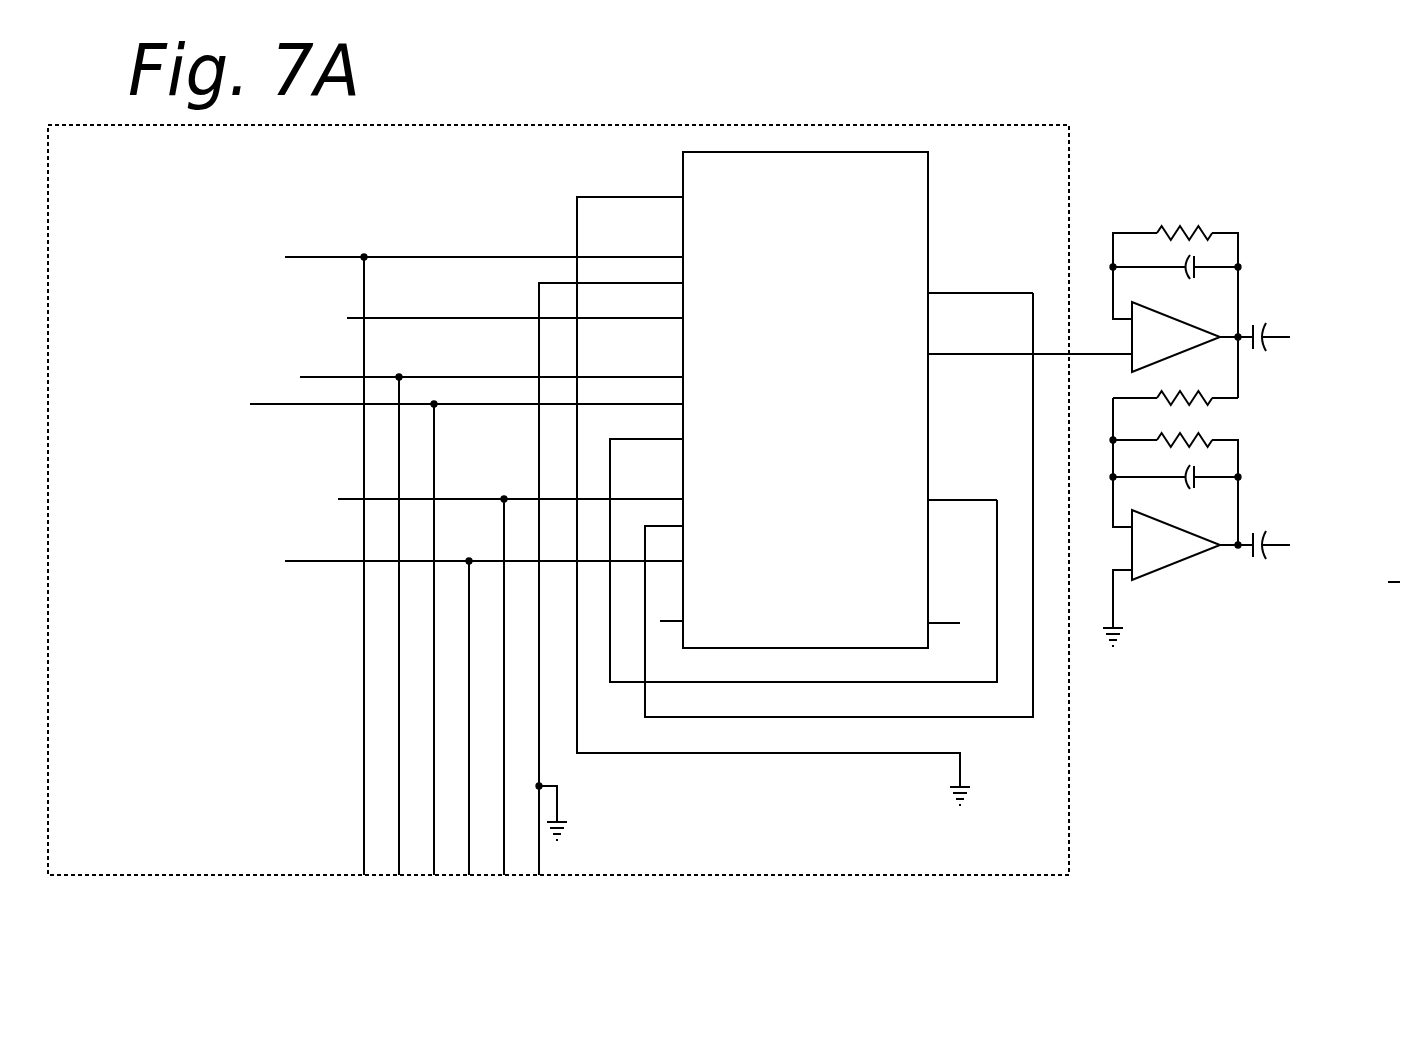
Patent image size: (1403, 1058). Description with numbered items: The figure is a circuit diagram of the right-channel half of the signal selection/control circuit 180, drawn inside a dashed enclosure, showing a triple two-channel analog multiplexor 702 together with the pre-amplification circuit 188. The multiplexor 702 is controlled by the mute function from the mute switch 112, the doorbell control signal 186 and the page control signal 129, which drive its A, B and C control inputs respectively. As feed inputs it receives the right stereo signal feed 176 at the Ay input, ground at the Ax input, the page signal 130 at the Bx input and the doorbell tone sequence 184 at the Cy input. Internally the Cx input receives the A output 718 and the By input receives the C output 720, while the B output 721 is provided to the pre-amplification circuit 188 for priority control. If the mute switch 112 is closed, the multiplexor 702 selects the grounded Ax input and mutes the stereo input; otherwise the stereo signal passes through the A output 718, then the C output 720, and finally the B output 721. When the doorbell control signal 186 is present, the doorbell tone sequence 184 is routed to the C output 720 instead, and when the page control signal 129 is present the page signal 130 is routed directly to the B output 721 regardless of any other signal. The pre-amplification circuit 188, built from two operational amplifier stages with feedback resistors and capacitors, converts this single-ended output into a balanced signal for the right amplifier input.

The multiplexor 702 is at (802, 176).
The output (A 0/1) 718 is at (893, 284).
The output (B 0/1) 721 is at (895, 357).
The output (C 0/1) 720 is at (893, 501).
The signal selection/control circuit 180 is at (1070, 197).
The mute switch 112 is at (457, 258).
The stereo signal feed 176 is at (457, 318).
The page control signal 129 is at (457, 378).
The page signal 130 is at (350, 406).
The doorbell control signal 186 is at (525, 500).
The doorbell tone sequence 184 is at (350, 563).
The pre-amplification circuit 188 is at (1317, 394).